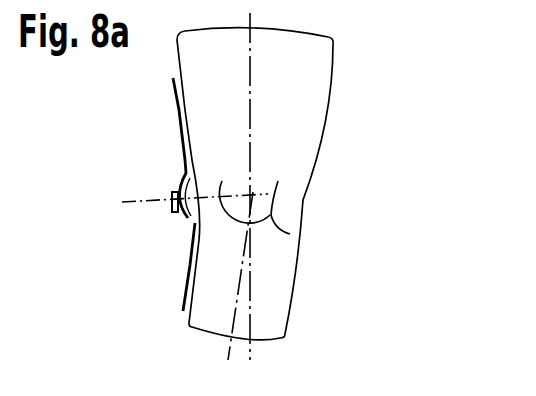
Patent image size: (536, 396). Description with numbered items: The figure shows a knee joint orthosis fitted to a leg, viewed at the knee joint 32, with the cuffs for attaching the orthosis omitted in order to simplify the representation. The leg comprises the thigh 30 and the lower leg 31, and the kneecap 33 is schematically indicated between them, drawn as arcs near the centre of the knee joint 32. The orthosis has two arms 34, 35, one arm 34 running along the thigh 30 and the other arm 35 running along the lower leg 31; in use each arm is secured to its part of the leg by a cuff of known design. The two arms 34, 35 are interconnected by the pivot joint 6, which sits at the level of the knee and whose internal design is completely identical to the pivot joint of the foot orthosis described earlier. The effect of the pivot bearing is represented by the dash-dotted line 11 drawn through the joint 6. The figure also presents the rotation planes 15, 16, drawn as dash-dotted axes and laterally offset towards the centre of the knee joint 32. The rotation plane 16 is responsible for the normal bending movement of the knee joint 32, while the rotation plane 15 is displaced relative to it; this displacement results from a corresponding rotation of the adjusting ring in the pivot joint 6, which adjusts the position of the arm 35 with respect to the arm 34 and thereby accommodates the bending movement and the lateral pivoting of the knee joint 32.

The pivot joint 6 is at (169, 209).
The dash-dotted line 11 is at (134, 200).
The rotation plane 15 is at (226, 353).
The rotation plane 16 is at (252, 352).
The thigh 30 is at (311, 70).
The lower leg 31 is at (283, 296).
The knee joint 32 is at (310, 196).
The kneecap 33 is at (290, 234).
The arm 34 is at (173, 90).
The arm 35 is at (186, 283).